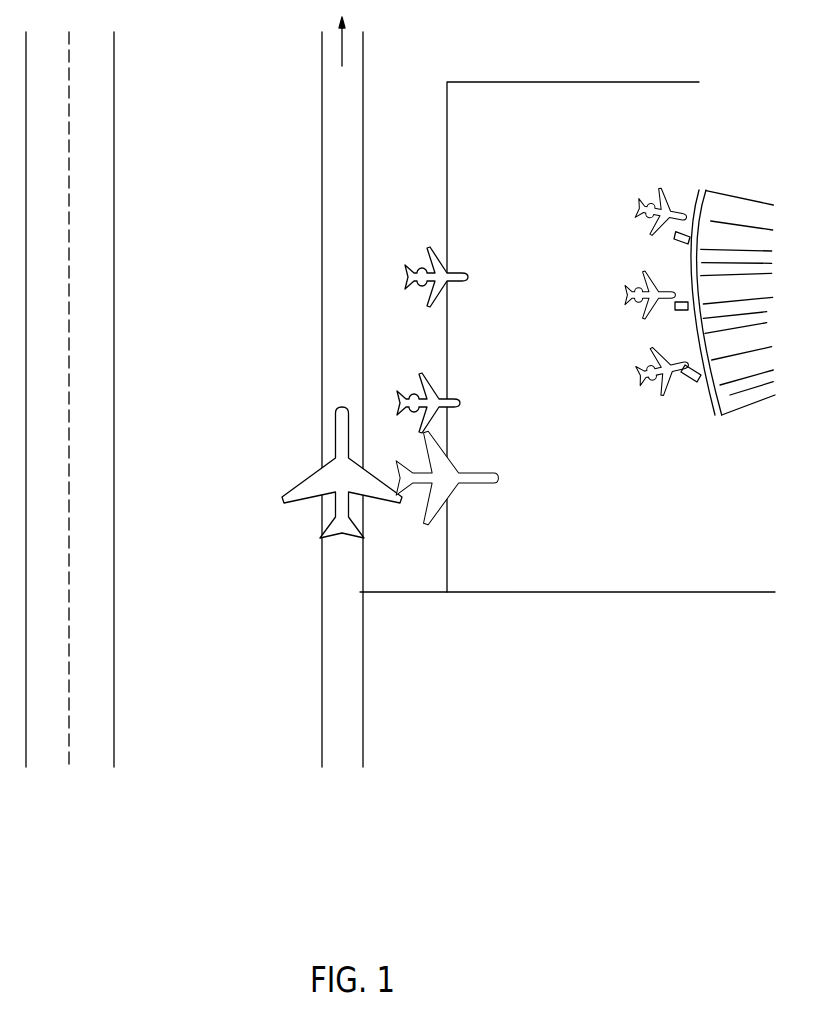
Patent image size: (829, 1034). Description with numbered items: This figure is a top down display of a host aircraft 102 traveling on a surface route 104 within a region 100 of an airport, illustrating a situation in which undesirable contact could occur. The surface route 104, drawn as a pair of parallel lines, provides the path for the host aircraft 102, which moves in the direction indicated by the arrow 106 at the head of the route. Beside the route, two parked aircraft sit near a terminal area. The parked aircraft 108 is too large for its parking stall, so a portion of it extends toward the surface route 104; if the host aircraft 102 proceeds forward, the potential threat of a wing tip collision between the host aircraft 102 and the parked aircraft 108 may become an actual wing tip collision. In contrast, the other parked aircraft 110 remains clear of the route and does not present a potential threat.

The region of an airport 100 is at (235, 131).
The host aircraft 102 is at (297, 487).
The surface route 104 is at (348, 766).
The arrow 106 is at (343, 52).
The parked aircraft 108 is at (473, 485).
The parked aircraft 110 is at (462, 403).